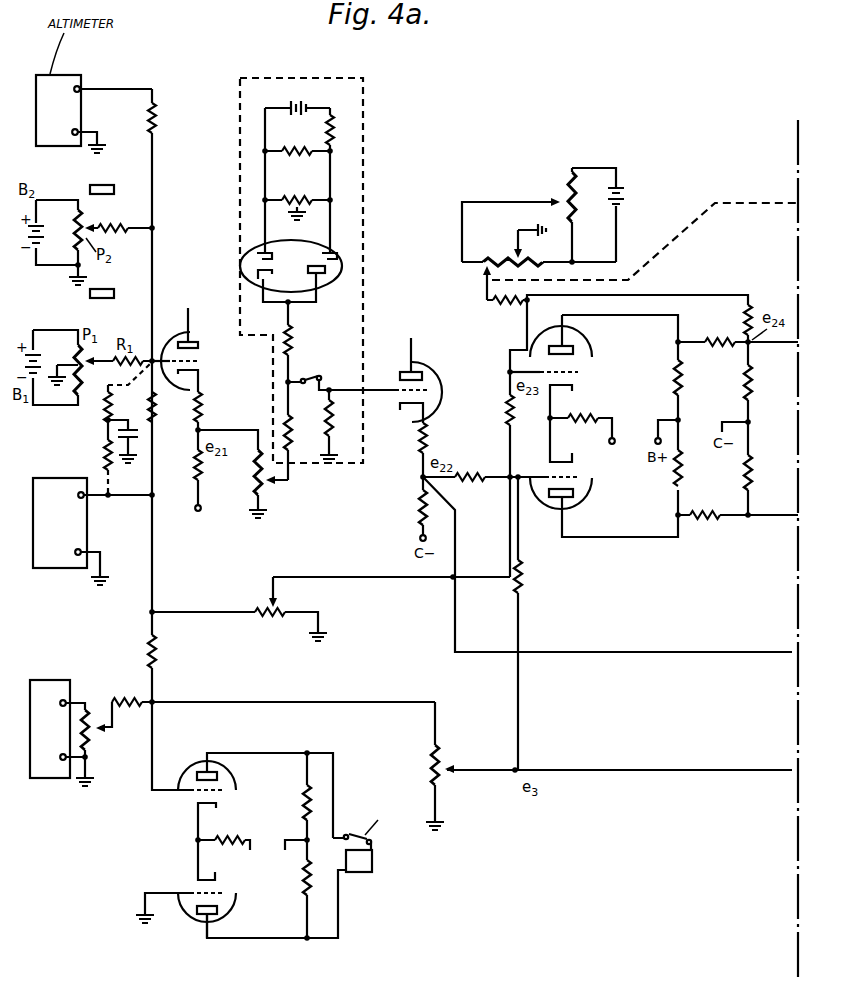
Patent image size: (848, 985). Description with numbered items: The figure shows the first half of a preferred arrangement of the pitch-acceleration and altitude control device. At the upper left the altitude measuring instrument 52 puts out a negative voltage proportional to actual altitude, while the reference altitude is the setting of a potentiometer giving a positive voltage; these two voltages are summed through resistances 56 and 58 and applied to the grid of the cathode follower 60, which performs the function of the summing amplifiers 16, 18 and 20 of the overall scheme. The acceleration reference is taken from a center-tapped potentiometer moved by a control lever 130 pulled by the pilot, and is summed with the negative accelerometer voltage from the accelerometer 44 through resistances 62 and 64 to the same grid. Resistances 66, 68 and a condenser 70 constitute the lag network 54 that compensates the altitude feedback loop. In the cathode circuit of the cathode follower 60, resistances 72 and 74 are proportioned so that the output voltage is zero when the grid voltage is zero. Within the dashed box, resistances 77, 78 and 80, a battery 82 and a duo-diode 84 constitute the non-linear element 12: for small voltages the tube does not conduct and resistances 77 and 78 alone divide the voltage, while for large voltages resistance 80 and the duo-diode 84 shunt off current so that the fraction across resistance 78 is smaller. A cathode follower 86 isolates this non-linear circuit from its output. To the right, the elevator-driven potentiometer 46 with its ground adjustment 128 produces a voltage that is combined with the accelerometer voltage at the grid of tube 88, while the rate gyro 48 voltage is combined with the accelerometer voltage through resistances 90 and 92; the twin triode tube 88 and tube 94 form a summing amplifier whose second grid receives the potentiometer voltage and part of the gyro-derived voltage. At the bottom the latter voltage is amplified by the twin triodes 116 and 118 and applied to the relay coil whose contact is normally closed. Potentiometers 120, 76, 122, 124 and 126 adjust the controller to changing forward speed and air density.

The non-linear element 12 is at (367, 84).
The summing amplifier 16 is at (194, 338).
The summing amplifier 18 is at (194, 338).
The summing amplifier 20 is at (194, 338).
The accelerometer 44 is at (51, 570).
The potentiometer 46 is at (488, 262).
The rate gyro 48 is at (81, 746).
The altitude measuring instrument 52 is at (60, 80).
The lag network 54 is at (110, 431).
The resistance 56 is at (160, 120).
The resistance 58 is at (118, 233).
The cathode follower 60 is at (191, 331).
The resistance 62 is at (117, 368).
The resistance 64 is at (156, 408).
The resistance 66 is at (111, 399).
The resistance 68 is at (105, 452).
The condenser 70 is at (136, 432).
The resistance 72 is at (204, 400).
The resistance 74 is at (203, 470).
The potentiometer 76 is at (268, 487).
The resistance 77 is at (297, 336).
The resistance 78 is at (291, 433).
The resistance 80 is at (334, 423).
The battery 82 is at (294, 98).
The duo-diode 84 is at (343, 262).
The cathode follower 86 is at (433, 381).
The tube 88 is at (583, 346).
The resistance 90 is at (128, 700).
The resistance 92 is at (150, 645).
The tube 94 is at (582, 499).
The twin triode 116 is at (222, 772).
The twin triode 118 is at (230, 907).
The potentiometer 120 is at (97, 733).
The potentiometer 122 is at (270, 598).
The potentiometer 124 is at (579, 192).
The potentiometer 126 is at (450, 779).
The ground adjustment 128 is at (514, 249).
The control lever 130 is at (88, 293).